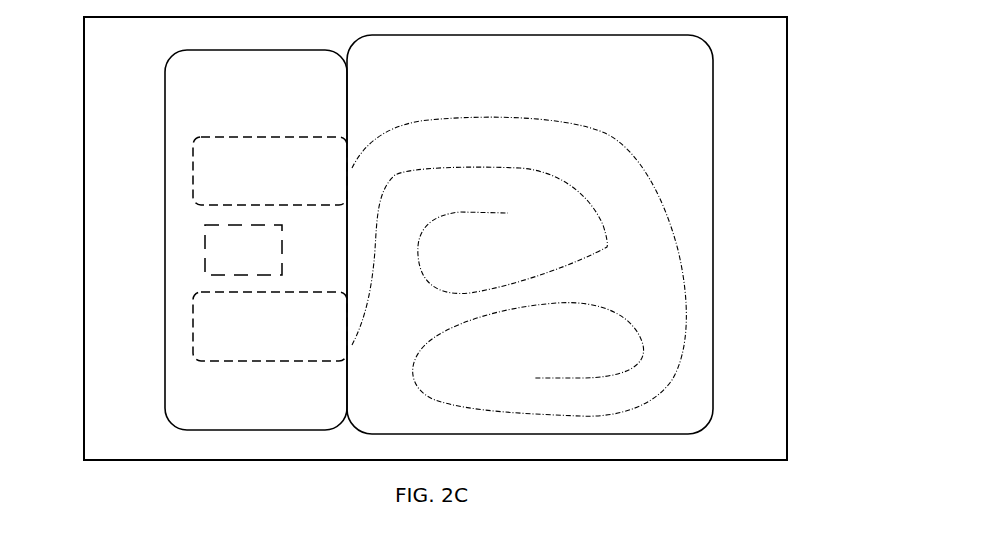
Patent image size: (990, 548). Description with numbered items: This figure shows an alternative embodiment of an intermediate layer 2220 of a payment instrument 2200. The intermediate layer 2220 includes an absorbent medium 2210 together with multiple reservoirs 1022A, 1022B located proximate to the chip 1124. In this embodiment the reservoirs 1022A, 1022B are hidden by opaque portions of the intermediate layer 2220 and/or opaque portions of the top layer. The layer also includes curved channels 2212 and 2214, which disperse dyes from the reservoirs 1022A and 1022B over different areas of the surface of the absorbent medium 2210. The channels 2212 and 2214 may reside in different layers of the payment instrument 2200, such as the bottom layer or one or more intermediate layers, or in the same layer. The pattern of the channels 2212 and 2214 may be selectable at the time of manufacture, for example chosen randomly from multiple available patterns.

The payment instrument 2200 is at (822, 155).
The intermediate layer 2220 is at (275, 121).
The absorbent medium 2210 is at (550, 88).
The reservoir 1022A is at (295, 193).
The reservoir 1022B is at (297, 348).
The chip 1124 is at (262, 271).
The curved channel 2212 is at (627, 157).
The curved channel 2214 is at (607, 247).